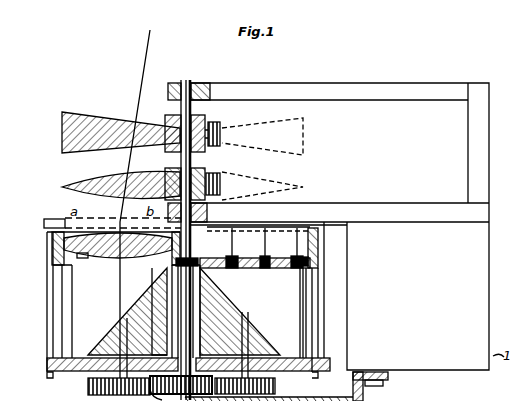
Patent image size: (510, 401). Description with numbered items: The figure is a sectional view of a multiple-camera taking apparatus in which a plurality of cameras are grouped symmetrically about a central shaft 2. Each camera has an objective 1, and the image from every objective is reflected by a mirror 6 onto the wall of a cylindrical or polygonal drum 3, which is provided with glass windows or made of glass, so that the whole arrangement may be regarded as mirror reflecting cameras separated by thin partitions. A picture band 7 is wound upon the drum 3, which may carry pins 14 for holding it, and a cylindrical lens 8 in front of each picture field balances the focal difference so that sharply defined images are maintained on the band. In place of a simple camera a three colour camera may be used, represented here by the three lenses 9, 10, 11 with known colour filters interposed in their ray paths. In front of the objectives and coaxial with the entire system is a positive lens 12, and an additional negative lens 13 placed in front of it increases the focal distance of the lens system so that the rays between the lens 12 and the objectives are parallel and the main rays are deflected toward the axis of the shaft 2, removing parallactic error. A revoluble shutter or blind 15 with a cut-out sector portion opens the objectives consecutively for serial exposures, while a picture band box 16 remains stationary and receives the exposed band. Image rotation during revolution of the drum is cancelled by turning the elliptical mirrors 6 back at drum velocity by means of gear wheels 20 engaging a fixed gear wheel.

The objective 1 is at (100, 258).
The shaft 2 is at (186, 82).
The drum 3 is at (52, 283).
The mirror 6 is at (252, 310).
The picture band 7 is at (47, 327).
The cylindrical lens 8 is at (54, 281).
The lens 9 is at (258, 247).
The lens 10 is at (255, 248).
The lens 11 is at (293, 248).
The positive lens 12 is at (96, 182).
The negative lens 13 is at (122, 130).
The pin 14 is at (52, 236).
The revoluble shutter 15 is at (50, 219).
The picture band box 16 is at (487, 224).
The gear wheel 20 is at (88, 386).